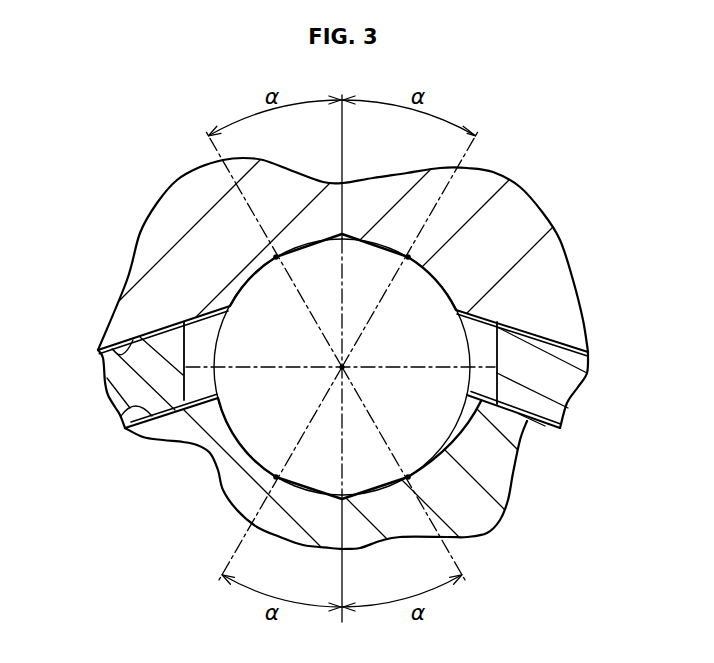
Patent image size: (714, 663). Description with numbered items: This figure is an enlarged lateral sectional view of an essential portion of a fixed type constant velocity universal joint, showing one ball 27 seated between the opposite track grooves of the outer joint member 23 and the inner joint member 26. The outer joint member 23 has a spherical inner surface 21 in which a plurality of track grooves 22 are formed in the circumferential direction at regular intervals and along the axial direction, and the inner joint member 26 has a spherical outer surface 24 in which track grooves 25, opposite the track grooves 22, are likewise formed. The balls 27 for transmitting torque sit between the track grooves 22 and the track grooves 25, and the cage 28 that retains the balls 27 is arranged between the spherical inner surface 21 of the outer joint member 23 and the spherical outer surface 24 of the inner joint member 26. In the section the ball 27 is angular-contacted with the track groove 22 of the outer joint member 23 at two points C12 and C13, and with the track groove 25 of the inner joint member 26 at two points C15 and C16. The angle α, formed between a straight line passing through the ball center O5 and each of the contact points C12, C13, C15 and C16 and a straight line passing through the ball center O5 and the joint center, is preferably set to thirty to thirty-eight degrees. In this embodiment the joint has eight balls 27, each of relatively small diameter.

The spherical inner surface 21 is at (100, 358).
The track grooves 22 is at (331, 240).
The outer joint member 23 is at (172, 222).
The spherical outer surface 24 is at (130, 406).
The track grooves 25 is at (346, 510).
The inner joint member 26 is at (500, 485).
The balls 27 is at (243, 410).
The cage 28 is at (553, 358).
The ball center O5 is at (343, 366).
The contact point C12 is at (408, 261).
The contact point C13 is at (276, 261).
The contact point C15 is at (408, 474).
The contact point C16 is at (276, 474).